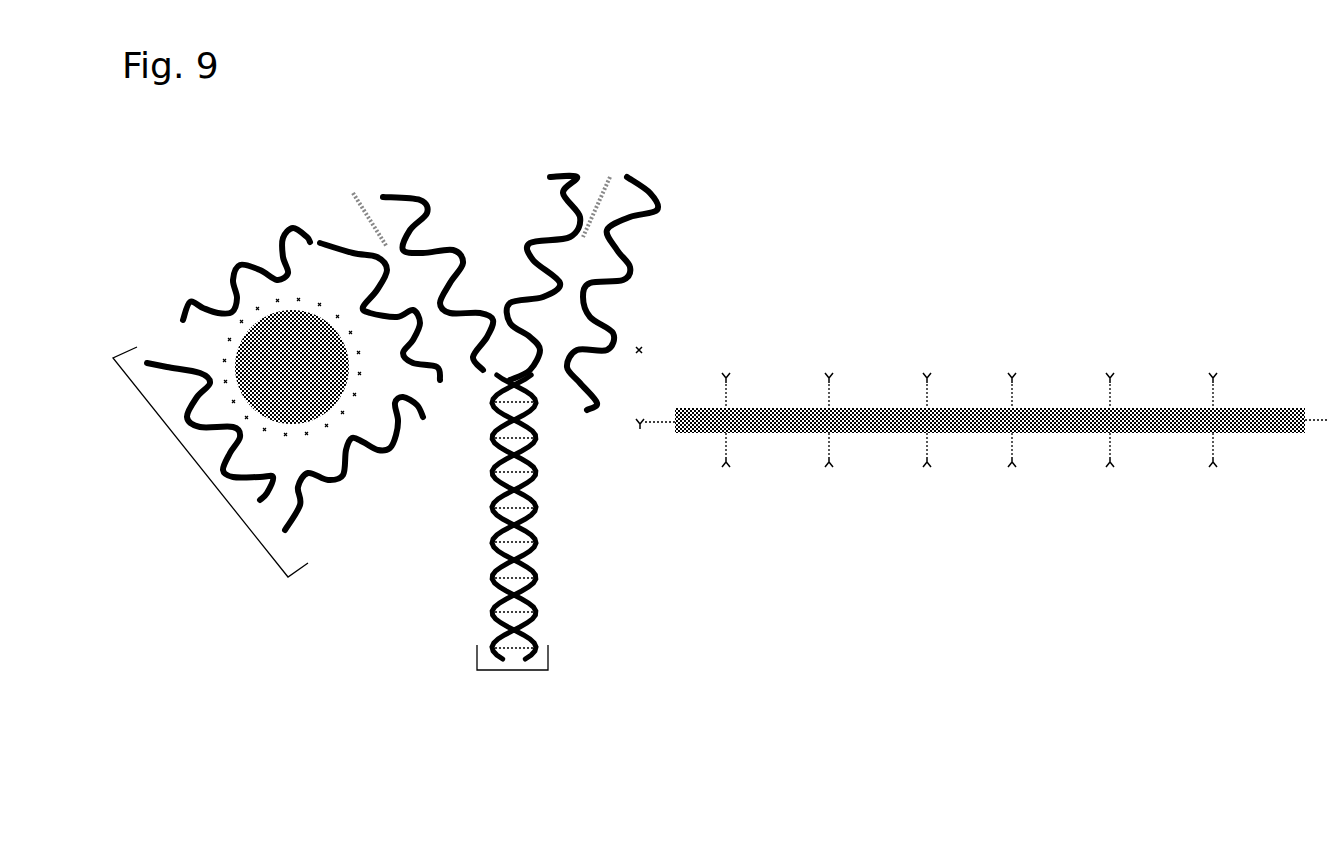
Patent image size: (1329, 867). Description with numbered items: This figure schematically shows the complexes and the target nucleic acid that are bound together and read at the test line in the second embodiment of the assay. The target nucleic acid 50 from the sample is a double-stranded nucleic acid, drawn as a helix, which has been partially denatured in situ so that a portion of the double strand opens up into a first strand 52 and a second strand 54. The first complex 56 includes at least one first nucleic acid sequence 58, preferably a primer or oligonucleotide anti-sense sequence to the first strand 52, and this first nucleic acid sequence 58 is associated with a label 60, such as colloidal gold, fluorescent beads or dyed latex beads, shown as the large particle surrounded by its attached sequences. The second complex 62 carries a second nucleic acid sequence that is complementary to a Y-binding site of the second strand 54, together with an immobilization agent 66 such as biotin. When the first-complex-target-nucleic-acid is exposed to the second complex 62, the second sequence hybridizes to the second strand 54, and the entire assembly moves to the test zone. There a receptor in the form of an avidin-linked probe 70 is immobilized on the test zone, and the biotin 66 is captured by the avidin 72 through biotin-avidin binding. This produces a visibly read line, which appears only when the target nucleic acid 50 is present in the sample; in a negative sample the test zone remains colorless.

The target nucleic acid 50 is at (512, 545).
The first strand 52 is at (427, 220).
The second strand 54 is at (556, 175).
The first complex 56 is at (211, 402).
The first nucleic acid sequence 58 is at (389, 456).
The label 60 is at (275, 347).
The second complex 62 is at (655, 193).
The immobilization agent 66 is at (642, 350).
The avidin-linked probe 70 is at (803, 427).
The avidin 72 is at (723, 476).